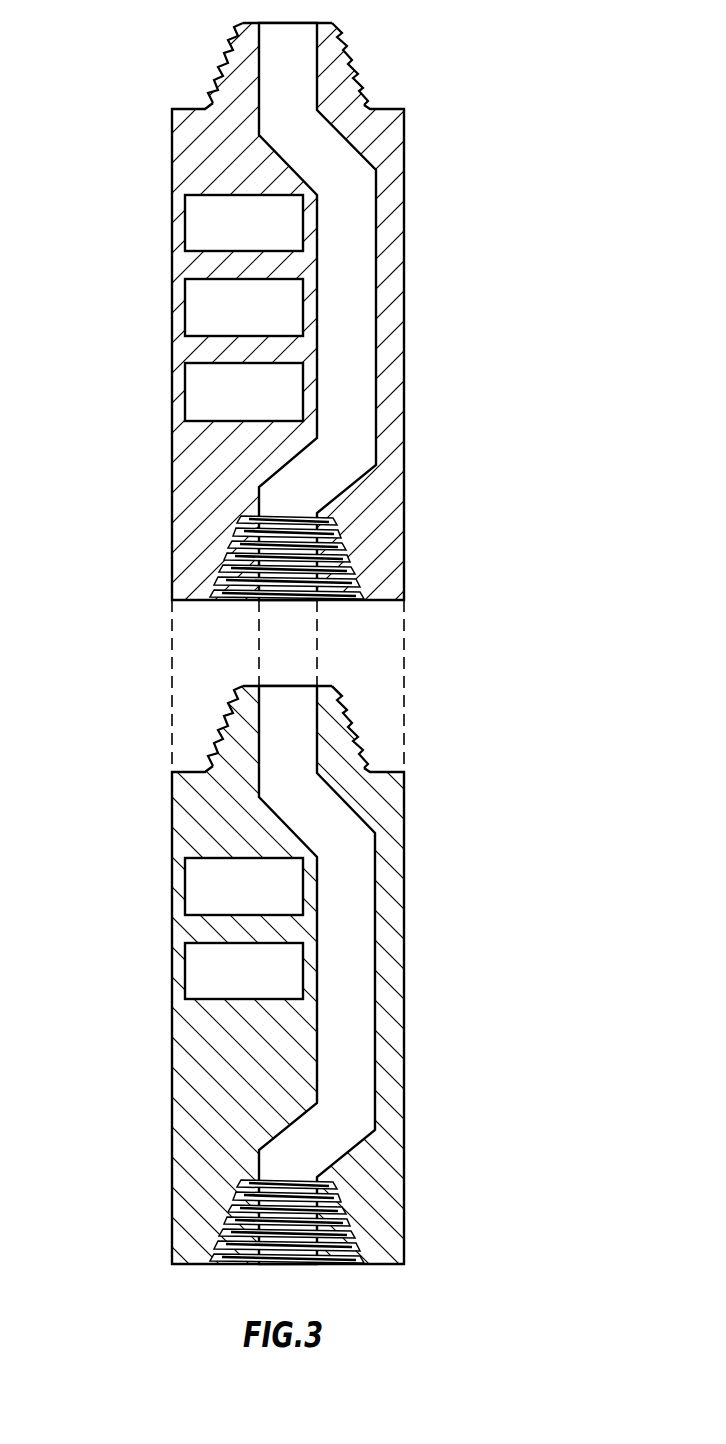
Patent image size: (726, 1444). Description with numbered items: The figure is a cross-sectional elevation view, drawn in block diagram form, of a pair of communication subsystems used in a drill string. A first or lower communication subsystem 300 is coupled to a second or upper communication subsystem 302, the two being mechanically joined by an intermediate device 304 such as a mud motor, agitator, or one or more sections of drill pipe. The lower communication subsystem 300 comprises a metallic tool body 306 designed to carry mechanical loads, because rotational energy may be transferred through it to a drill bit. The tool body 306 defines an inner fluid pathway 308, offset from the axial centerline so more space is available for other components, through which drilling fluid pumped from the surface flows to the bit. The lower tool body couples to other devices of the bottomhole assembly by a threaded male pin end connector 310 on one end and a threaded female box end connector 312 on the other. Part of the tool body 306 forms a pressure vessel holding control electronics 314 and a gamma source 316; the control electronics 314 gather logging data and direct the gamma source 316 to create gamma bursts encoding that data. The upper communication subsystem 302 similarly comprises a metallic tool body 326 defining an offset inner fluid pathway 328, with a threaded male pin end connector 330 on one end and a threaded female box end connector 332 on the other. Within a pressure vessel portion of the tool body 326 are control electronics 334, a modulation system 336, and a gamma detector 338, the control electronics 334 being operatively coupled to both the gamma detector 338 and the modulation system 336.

The lower communication subsystem 300 is at (322, 975).
The upper communication subsystem 302 is at (317, 311).
The intermediate device 304 is at (430, 684).
The tool body 306 is at (392, 865).
The inner fluid pathway 308 is at (362, 902).
The threaded male pin end connector 310 is at (356, 748).
The threaded female box end connector 312 is at (350, 1227).
The control electronics 314 is at (185, 958).
The gamma source 316 is at (185, 873).
The tool body 326 is at (393, 138).
The inner fluid pathway 328 is at (357, 213).
The threaded male pin end connector 330 is at (352, 66).
The threaded female box end connector 332 is at (347, 547).
The control electronics 334 is at (185, 297).
The modulation system 336 is at (185, 210).
The gamma detector 338 is at (185, 383).